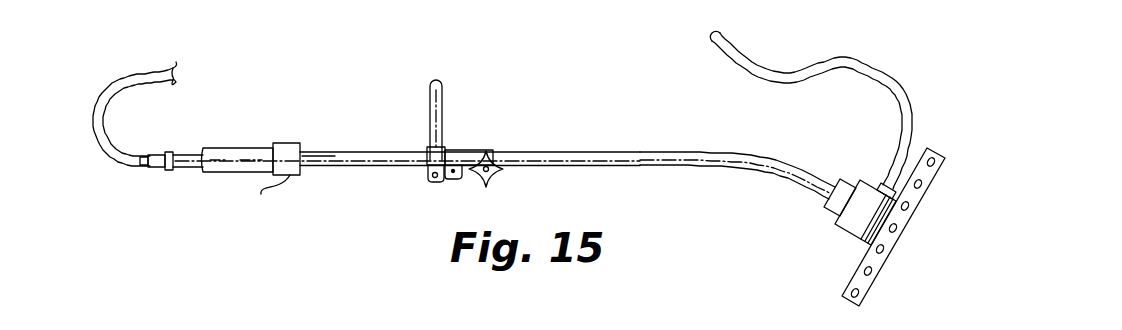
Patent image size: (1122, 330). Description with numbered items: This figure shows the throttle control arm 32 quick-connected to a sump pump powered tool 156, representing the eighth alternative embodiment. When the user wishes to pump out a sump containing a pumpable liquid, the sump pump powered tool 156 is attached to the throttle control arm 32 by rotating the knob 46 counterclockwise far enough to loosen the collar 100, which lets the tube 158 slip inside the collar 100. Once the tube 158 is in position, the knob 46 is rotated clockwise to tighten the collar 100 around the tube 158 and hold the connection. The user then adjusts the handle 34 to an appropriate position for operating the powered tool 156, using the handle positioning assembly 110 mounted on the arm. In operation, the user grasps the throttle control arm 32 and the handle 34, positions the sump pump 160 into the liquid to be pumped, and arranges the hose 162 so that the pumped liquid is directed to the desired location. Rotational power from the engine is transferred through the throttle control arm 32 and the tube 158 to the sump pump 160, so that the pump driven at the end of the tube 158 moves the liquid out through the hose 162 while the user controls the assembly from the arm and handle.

The throttle control arm 32 is at (333, 166).
The handle 34 is at (431, 82).
The handle positioning assembly 110 is at (431, 181).
The collar 100 is at (465, 150).
The knob 46 is at (495, 183).
The tube 158 is at (530, 151).
The hose 162 is at (770, 80).
The sump pump powered tool 156 is at (853, 178).
The sump pump 160 is at (855, 277).